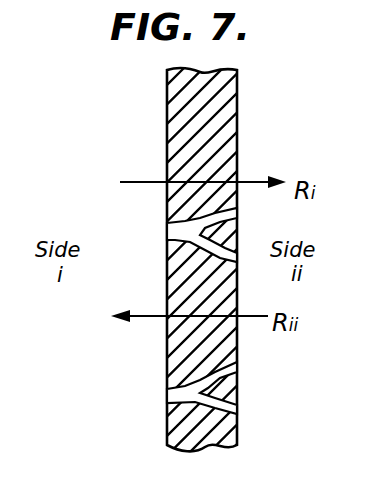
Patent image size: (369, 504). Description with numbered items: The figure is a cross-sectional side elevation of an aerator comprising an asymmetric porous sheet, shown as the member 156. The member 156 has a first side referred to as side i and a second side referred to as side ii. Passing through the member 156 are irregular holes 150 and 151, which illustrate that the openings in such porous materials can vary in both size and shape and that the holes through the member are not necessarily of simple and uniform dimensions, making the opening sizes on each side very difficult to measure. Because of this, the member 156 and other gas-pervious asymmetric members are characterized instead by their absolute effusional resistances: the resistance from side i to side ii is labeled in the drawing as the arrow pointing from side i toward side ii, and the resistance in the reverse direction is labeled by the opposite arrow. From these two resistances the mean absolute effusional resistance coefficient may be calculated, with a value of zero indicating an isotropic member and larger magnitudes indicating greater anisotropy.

The member 156 is at (239, 122).
The hole 150 is at (172, 242).
The hole 151 is at (238, 413).